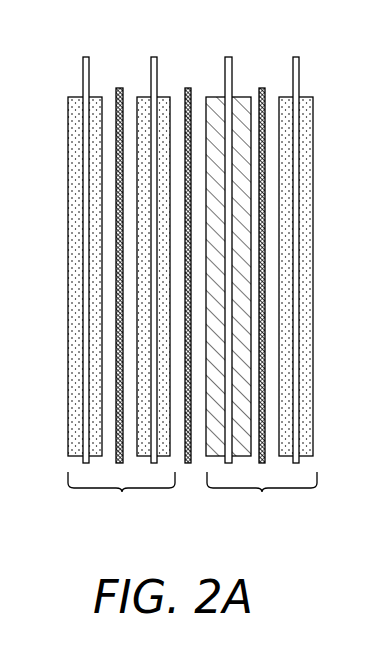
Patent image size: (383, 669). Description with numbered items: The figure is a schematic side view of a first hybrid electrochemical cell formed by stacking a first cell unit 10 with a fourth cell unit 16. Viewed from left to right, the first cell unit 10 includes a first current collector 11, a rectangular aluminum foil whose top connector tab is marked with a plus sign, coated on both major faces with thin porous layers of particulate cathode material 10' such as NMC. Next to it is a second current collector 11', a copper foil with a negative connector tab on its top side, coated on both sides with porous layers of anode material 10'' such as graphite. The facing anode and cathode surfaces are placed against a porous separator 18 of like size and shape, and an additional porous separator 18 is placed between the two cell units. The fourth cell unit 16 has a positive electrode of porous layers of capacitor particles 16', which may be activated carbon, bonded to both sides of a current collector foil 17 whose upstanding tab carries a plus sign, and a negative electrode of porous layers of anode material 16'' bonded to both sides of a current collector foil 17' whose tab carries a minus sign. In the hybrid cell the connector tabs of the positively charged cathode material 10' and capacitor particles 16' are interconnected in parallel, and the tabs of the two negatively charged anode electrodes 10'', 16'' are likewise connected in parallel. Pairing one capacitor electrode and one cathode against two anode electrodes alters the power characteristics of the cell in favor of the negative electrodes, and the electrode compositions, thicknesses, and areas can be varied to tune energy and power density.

The first cell unit 10 is at (94, 266).
The cathode material 10' is at (58, 235).
The anode material 10'' is at (91, 237).
The first current collector 11 is at (71, 235).
The second current collector 11' is at (139, 237).
The fourth cell unit 16 is at (280, 278).
The anode material 16'' is at (280, 247).
The capacitor particles 16' is at (306, 247).
The current collector foil 17 is at (209, 247).
The current collector foil 17' is at (323, 247).
The porous separator 18 is at (118, 88).